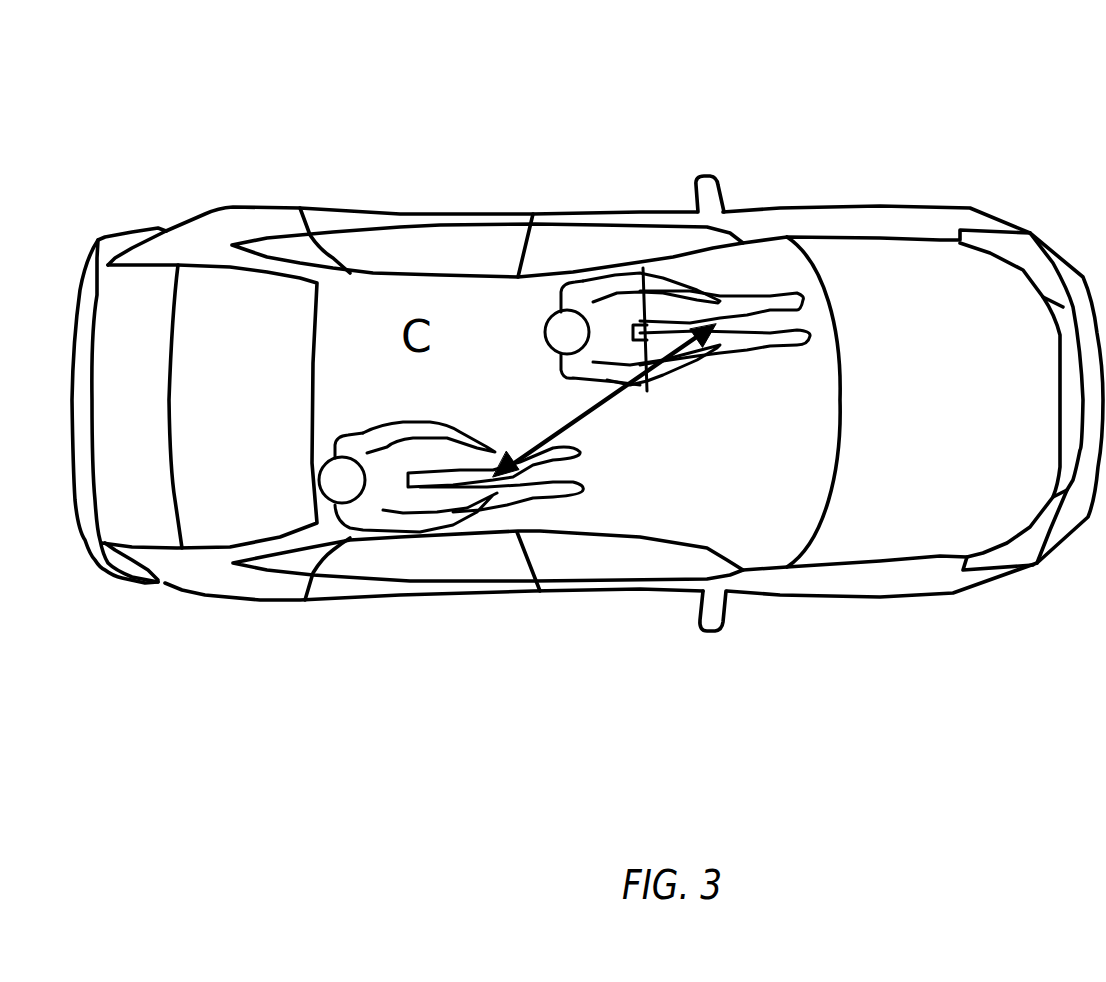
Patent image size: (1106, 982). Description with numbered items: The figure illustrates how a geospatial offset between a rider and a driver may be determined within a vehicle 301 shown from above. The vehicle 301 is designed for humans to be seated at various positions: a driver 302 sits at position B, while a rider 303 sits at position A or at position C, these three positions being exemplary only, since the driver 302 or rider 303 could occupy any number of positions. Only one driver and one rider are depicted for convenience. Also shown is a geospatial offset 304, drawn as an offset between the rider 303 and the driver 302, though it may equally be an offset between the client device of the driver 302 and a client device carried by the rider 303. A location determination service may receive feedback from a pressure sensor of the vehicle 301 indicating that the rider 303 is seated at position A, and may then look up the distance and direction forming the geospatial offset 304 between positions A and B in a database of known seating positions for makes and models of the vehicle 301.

The vehicle 301 is at (909, 202).
The driver 302 is at (573, 293).
The rider 303 is at (360, 520).
The geospatial offset 304 is at (598, 400).